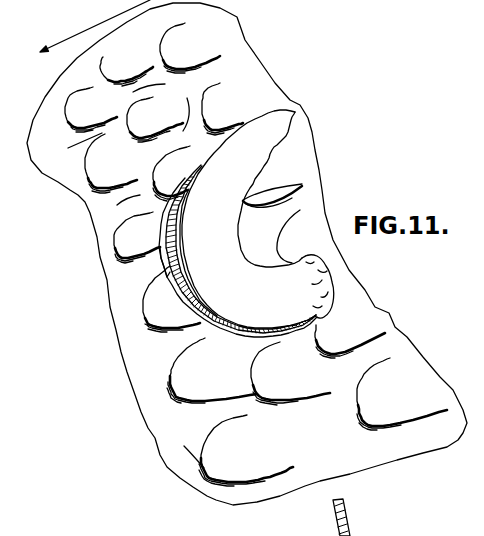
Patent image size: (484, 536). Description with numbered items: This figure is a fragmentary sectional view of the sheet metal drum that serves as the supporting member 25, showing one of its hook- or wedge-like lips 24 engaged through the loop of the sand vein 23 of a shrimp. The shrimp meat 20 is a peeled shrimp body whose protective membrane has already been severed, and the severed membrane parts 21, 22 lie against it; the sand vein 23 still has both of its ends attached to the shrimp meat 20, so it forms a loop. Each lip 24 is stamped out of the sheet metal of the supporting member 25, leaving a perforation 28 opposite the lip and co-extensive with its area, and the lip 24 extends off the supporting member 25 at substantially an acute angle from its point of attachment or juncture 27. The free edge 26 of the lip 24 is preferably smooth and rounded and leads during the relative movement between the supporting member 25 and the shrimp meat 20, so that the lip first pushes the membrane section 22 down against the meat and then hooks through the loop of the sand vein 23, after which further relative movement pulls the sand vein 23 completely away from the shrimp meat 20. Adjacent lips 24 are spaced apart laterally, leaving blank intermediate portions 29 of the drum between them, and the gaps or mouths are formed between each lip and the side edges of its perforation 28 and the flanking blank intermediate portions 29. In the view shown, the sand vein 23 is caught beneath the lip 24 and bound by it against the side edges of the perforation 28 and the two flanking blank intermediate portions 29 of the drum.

The shrimp meat 20 is at (221, 264).
The protective membrane part 21 is at (210, 338).
The protective membrane part 22 is at (228, 324).
The sand vein 23 is at (158, 273).
The lip 24 is at (208, 52).
The supporting member 25 is at (73, 146).
The free edge 26 is at (183, 403).
The juncture 27 is at (330, 386).
The perforation 28 is at (214, 500).
The blank intermediate portion 29 is at (143, 149).